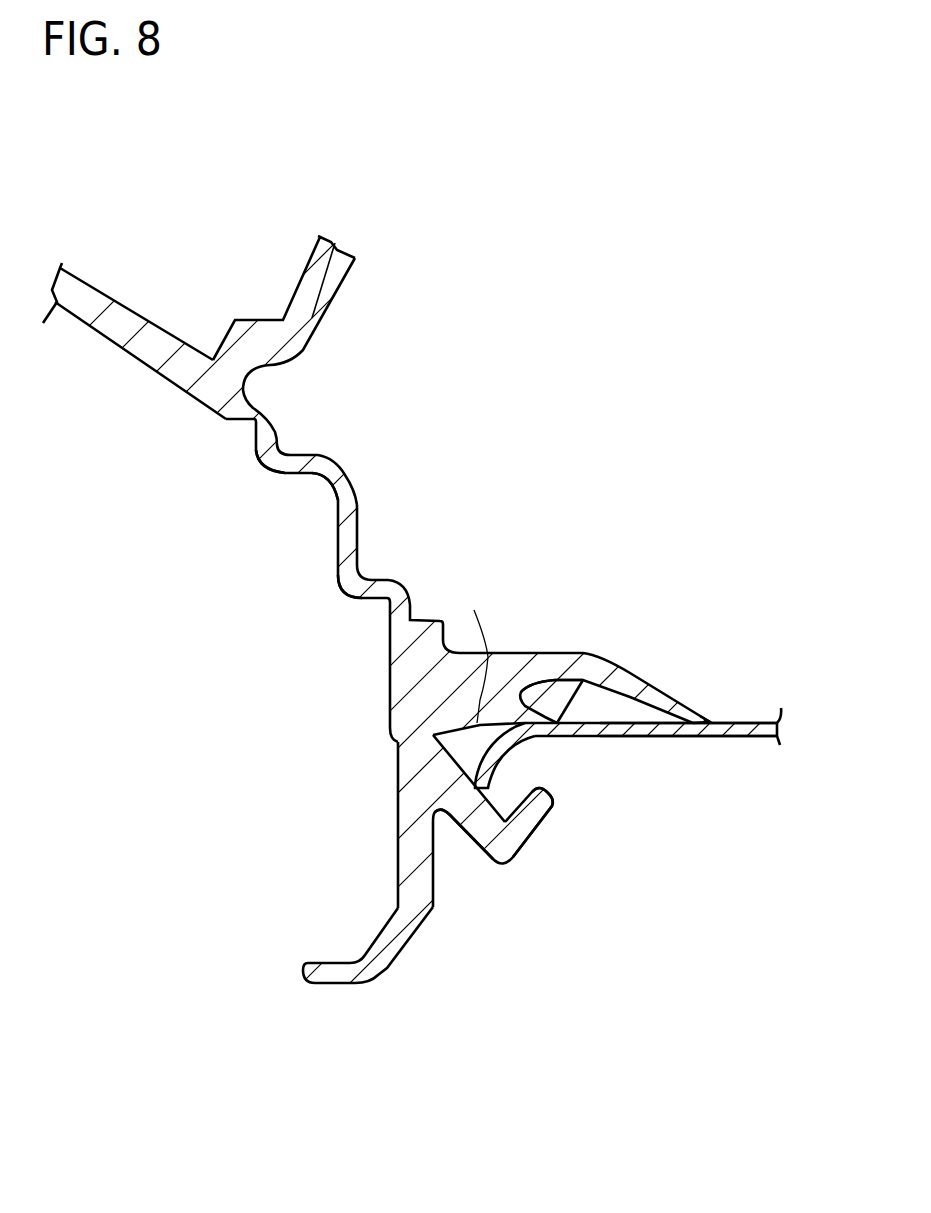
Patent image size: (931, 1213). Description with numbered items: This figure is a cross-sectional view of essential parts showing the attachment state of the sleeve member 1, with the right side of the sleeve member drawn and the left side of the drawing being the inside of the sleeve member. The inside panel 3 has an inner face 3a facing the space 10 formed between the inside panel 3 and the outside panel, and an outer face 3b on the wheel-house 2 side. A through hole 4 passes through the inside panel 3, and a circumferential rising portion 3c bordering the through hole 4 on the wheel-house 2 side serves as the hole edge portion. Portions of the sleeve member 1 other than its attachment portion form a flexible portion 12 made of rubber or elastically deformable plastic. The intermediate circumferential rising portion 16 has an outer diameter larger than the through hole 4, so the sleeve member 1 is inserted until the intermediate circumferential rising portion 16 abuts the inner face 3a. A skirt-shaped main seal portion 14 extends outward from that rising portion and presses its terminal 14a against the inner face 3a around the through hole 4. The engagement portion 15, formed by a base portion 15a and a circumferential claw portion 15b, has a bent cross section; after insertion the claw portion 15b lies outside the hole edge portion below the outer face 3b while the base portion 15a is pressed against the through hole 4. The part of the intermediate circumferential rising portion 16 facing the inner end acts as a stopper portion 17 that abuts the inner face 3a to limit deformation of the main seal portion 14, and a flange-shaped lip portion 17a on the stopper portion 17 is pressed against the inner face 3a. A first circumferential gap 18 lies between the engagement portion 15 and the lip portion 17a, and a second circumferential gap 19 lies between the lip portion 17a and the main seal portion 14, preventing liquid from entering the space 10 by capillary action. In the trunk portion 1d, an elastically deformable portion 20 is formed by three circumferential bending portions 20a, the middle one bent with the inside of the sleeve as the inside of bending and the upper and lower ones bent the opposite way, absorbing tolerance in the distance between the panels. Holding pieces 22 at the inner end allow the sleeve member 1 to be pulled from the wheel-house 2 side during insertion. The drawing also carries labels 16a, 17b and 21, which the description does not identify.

The sleeve member 1 is at (326, 290).
The trunk portion 1d is at (358, 488).
The wheel-house 2 is at (665, 992).
The inside panel 3 is at (755, 725).
The inner face 3a is at (730, 722).
The outer face 3b is at (753, 737).
The circumferential rising portion 3c is at (520, 770).
The through hole 4 is at (480, 765).
The space 10 is at (637, 455).
The flexible portion 12 is at (358, 532).
The main seal portion 14 is at (637, 678).
The terminal 14a is at (702, 737).
The engagement portion 15 is at (505, 862).
The base portion 15a is at (473, 830).
The circumferential claw portion 15b is at (537, 817).
The intermediate circumferential rising portion 16 is at (443, 688).
The slit 16a is at (470, 651).
The stopper portion 17 is at (555, 700).
The lip portion 17a is at (585, 618).
The protrusion side face 17b is at (590, 680).
The first circumferential gap 18 is at (398, 770).
The second circumferential gap 19 is at (538, 695).
The elastically deformable portion 20 is at (337, 460).
The circumferential bending portions 20a is at (345, 462).
The flange 21 is at (98, 288).
The holding pieces 22 is at (330, 984).